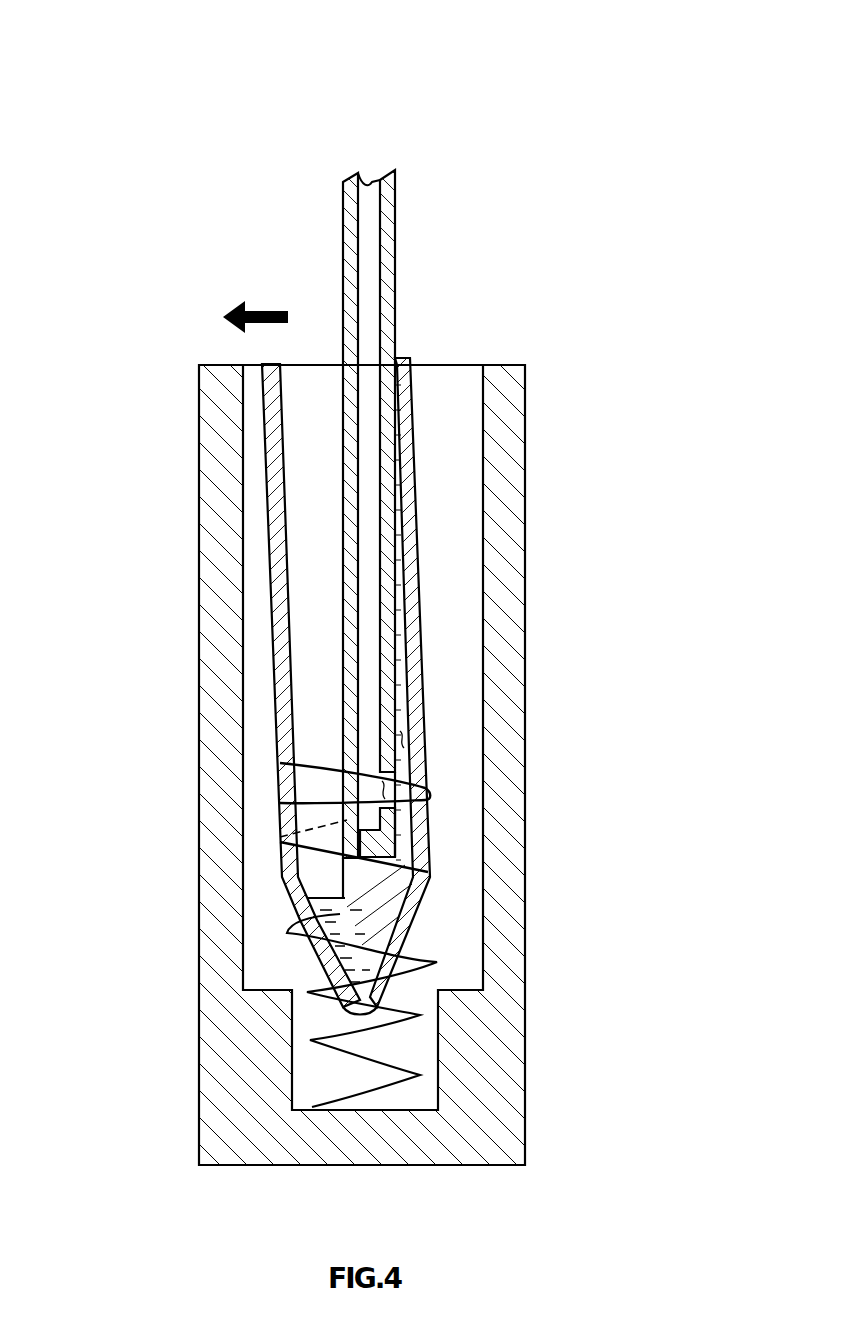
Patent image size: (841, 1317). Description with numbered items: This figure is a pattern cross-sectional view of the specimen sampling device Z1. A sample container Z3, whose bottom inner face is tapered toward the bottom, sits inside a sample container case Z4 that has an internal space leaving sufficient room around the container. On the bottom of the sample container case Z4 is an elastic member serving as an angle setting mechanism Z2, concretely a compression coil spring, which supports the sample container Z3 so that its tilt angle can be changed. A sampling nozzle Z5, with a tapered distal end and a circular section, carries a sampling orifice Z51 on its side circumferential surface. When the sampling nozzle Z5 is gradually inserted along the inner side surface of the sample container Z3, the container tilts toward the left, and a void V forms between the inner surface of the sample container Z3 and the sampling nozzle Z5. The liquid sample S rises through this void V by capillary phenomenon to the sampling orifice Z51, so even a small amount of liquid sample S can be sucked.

The specimen sampling device Z1 is at (555, 107).
The angle setting mechanism Z2 is at (437, 960).
The sample container Z3 is at (270, 563).
The sample container case Z4 is at (527, 1010).
The sampling nozzle Z5 is at (393, 303).
The sampling orifice Z51 is at (380, 788).
The void V is at (413, 717).
The liquid sample S is at (323, 900).